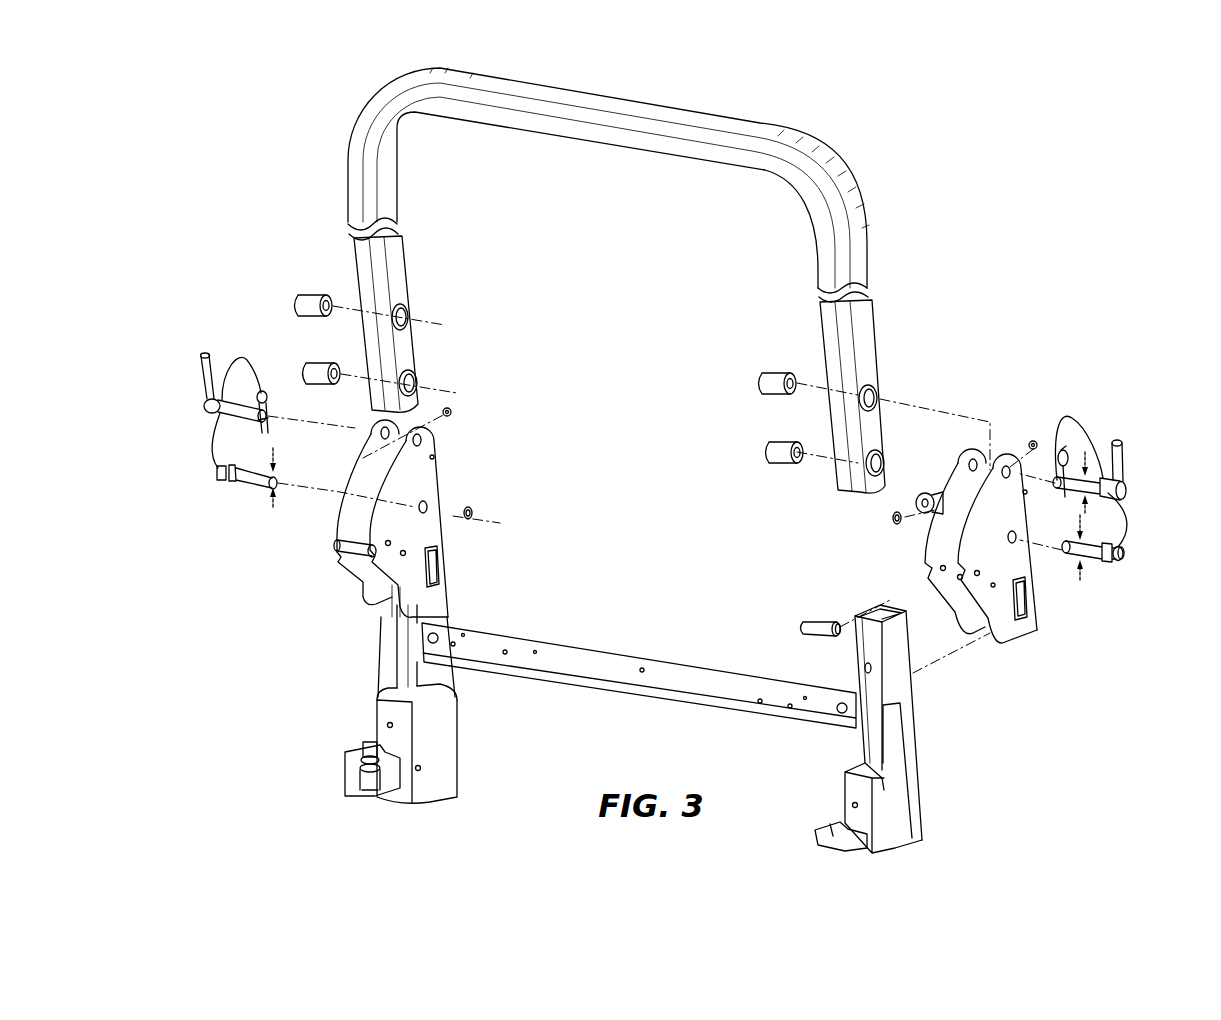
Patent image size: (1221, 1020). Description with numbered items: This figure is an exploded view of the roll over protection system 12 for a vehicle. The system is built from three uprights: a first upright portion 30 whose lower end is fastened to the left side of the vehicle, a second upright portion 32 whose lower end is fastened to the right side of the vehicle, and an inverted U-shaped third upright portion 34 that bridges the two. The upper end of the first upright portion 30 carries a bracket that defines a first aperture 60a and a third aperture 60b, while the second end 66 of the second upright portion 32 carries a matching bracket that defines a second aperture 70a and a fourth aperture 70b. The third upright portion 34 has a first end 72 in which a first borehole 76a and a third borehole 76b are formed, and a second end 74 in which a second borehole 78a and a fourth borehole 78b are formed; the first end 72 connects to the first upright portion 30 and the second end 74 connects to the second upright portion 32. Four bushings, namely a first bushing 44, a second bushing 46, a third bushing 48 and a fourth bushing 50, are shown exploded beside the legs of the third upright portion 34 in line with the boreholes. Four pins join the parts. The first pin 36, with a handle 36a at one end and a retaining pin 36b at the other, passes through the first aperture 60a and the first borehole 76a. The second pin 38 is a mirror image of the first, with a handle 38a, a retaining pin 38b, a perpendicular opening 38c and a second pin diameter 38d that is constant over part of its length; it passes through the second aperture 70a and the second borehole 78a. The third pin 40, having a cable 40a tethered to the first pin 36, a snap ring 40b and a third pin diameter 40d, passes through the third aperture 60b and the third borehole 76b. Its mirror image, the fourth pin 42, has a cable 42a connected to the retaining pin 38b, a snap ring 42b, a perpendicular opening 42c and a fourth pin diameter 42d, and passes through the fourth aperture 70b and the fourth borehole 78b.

The roll over protection system 12 is at (925, 175).
The first upright portion 30 is at (405, 633).
The second upright portion 32 is at (910, 752).
The third upright portion 34 is at (748, 125).
The first pin 36 is at (231, 394).
The handle 36a is at (203, 370).
The retaining pin 36b is at (268, 424).
The second pin 38 is at (1101, 458).
The handle 38a is at (1118, 445).
The retaining pin 38b is at (1024, 494).
The opening 38c is at (1068, 455).
The second pin diameter 38d is at (1085, 510).
The third pin 40 is at (209, 477).
The cable 40a is at (212, 453).
The snap ring 40b is at (478, 515).
The third pin diameter 40d is at (272, 505).
The fourth pin 42 is at (1121, 552).
The cable 42a is at (1128, 522).
The snap ring 42b is at (892, 522).
The opening 42c is at (1127, 551).
The fourth pin diameter 42d is at (1080, 578).
The first bushing 44 is at (306, 290).
The second bushing 46 is at (770, 375).
The third bushing 48 is at (310, 367).
The fourth bushing 50 is at (775, 448).
The first aperture 60a is at (424, 441).
The third aperture 60b is at (428, 505).
The second end 66 is at (977, 533).
The second aperture 70a is at (978, 455).
The fourth aperture 70b is at (1008, 540).
The first end 72 is at (426, 324).
The second end 74 is at (859, 414).
The first borehole 76a is at (406, 312).
The third borehole 76b is at (416, 382).
The second borehole 78a is at (876, 393).
The fourth borehole 78b is at (884, 460).